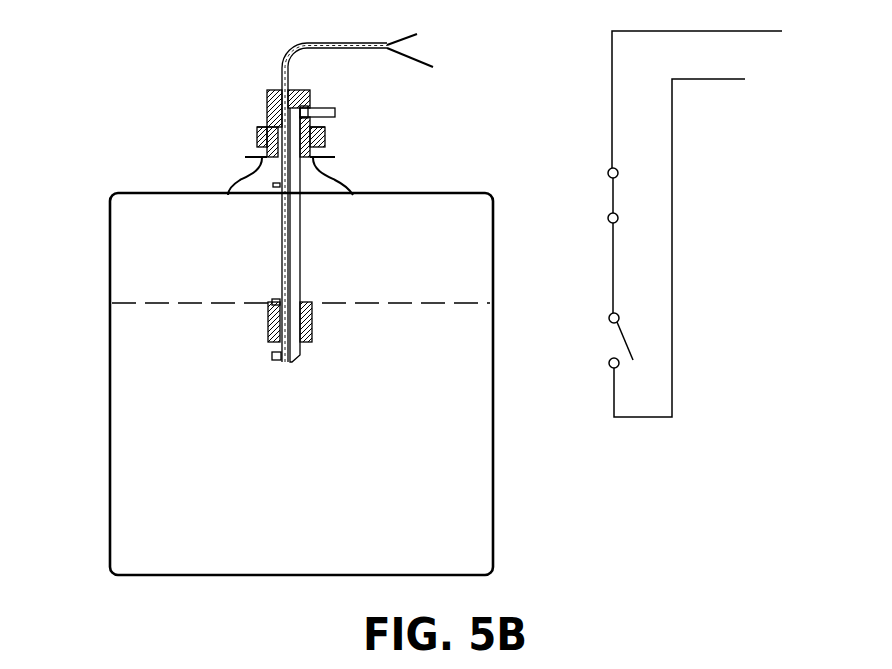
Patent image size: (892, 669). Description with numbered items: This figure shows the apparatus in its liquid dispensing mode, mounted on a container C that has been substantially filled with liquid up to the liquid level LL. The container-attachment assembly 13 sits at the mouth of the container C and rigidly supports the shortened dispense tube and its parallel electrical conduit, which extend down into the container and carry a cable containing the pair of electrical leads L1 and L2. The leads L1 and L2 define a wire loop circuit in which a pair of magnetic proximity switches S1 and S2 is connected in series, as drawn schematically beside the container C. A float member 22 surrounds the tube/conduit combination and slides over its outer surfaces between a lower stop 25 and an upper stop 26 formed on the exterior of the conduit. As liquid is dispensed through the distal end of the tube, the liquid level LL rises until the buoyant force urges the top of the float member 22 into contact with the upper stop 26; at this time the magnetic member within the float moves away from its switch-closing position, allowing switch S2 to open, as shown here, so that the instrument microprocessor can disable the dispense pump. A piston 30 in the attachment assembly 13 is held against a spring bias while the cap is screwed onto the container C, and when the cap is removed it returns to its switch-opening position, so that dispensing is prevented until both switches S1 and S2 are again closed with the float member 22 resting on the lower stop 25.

The container C is at (415, 193).
The liquid level LL is at (395, 300).
The container-attachment assembly 13 is at (338, 99).
The piston 30 is at (308, 160).
The float member 22 is at (312, 330).
The stop 26 is at (272, 302).
The stop 25 is at (272, 357).
The electrical lead L1 is at (412, 37).
The electrical lead L2 is at (425, 62).
The magnetic proximity switch S1 is at (602, 240).
The magnetic proximity switch S2 is at (610, 340).